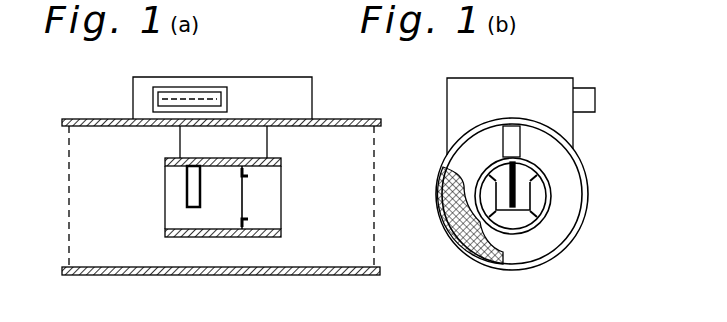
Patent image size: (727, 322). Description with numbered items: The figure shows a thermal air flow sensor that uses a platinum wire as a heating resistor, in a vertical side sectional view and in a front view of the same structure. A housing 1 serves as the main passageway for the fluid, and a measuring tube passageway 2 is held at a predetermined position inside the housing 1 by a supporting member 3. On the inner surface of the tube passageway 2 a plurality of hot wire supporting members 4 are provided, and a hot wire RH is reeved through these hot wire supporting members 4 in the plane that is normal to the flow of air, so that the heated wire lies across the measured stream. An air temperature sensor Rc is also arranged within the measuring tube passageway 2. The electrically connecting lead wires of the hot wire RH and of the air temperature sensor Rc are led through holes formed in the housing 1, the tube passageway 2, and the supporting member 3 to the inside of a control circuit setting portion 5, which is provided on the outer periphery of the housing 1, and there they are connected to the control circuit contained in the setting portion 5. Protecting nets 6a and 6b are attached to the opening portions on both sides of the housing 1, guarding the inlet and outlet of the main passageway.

In FIG. 1A, the housing 1 is at (346, 118).
In FIG. 1B, the housing 1 is at (590, 184).
In FIG. 1A, the measuring tube passageway 2 is at (281, 161).
In FIG. 1B, the measuring tube passageway 2 is at (542, 214).
In FIG. 1A, the supporting member 3 is at (180, 148).
In FIG. 1B, the supporting member 3 is at (516, 146).
In FIG. 1A, the hot wire supporting members 4 is at (249, 175).
In FIG. 1B, the hot wire supporting members 4 is at (533, 196).
In FIG. 1A, the control circuit setting portion 5 is at (285, 77).
In FIG. 1B, the control circuit setting portion 5 is at (532, 78).
In FIG. 1A, the protecting net 6a is at (69, 251).
In FIG. 1A, the protecting net 6b is at (374, 249).
In FIG. 1A, the air temperature sensor Rc is at (187, 193).
In FIG. 1B, the air temperature sensor Rc is at (512, 210).
In FIG. 1A, the hot wire RH is at (249, 201).
In FIG. 1B, the hot wire RH is at (460, 248).